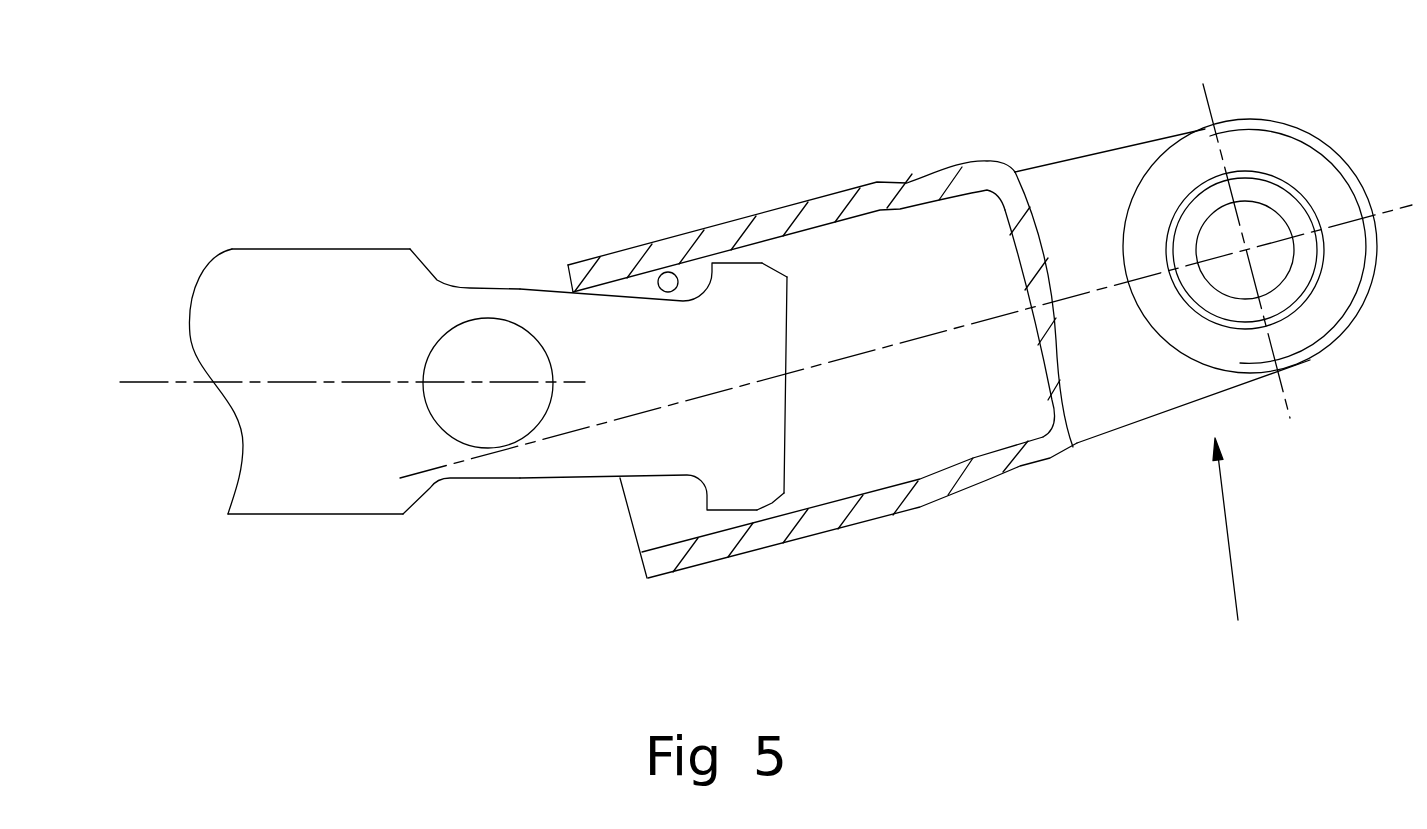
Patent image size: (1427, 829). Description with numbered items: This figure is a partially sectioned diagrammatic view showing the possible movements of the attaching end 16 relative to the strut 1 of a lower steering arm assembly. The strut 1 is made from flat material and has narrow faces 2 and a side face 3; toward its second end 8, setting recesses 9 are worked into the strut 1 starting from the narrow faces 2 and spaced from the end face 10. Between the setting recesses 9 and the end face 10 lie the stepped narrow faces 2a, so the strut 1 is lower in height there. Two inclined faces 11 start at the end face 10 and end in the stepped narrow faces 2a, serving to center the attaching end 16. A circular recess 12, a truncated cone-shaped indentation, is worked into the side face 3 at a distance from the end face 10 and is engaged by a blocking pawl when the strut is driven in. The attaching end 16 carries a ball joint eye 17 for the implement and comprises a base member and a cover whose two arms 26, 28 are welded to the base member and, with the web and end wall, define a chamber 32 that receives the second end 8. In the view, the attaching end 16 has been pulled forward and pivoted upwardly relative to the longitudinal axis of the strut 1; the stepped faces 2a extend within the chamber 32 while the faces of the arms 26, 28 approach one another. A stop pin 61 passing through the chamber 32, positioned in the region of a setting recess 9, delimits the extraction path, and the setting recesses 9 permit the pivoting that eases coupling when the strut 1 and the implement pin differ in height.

The strut 1 is at (215, 328).
The narrow faces 2 is at (320, 248).
The stepped narrow faces 2a is at (844, 350).
The side face 3 is at (352, 405).
The second end 8 is at (563, 335).
The setting recesses 9 is at (513, 288).
The end face 10 is at (785, 442).
The inclined faces 11 is at (787, 275).
The recess 12 is at (488, 383).
The attaching end 16 is at (1238, 620).
The ball joint eye 17 is at (1287, 310).
The arm 26 is at (935, 492).
The arm 28 is at (835, 205).
The chamber 32 is at (1012, 309).
The stop pin 61 is at (668, 272).